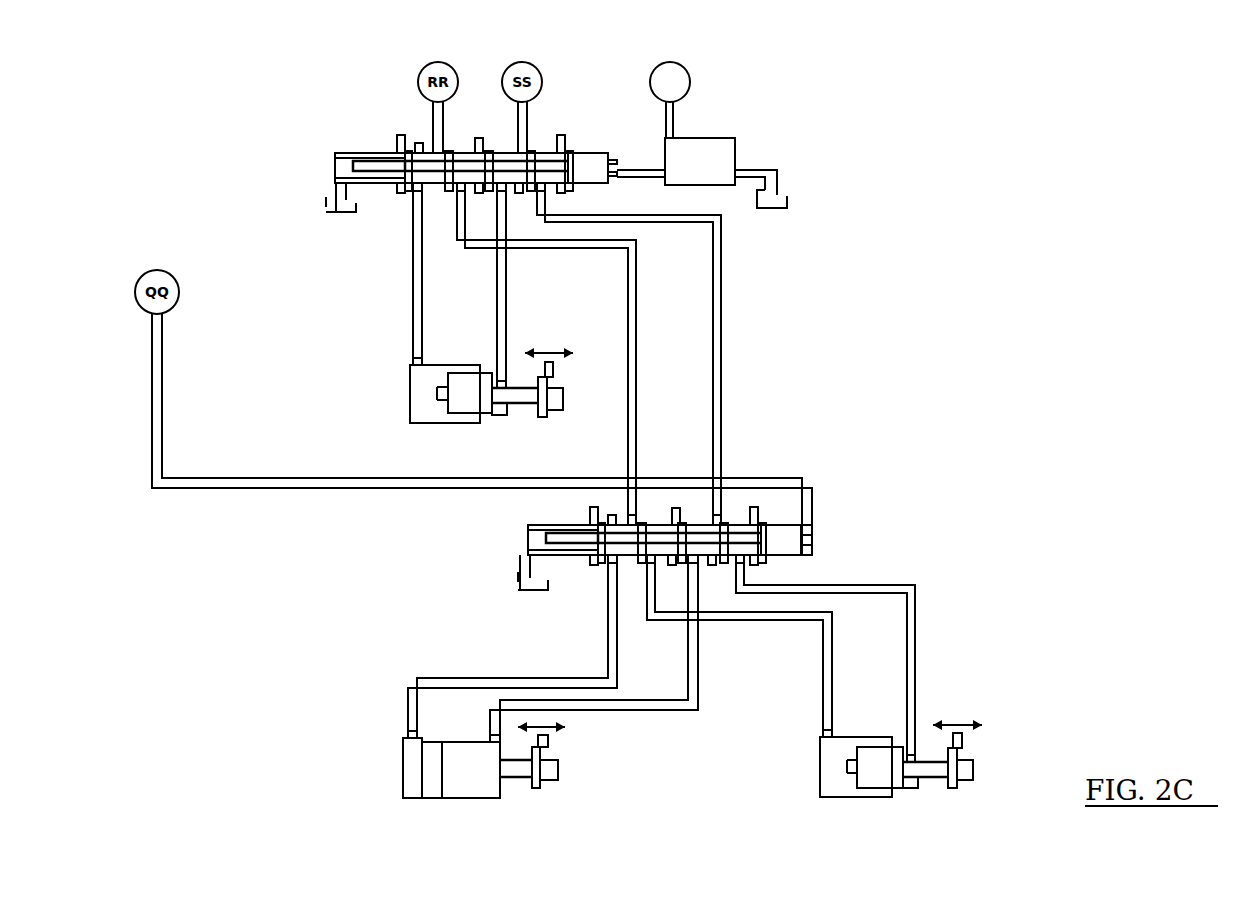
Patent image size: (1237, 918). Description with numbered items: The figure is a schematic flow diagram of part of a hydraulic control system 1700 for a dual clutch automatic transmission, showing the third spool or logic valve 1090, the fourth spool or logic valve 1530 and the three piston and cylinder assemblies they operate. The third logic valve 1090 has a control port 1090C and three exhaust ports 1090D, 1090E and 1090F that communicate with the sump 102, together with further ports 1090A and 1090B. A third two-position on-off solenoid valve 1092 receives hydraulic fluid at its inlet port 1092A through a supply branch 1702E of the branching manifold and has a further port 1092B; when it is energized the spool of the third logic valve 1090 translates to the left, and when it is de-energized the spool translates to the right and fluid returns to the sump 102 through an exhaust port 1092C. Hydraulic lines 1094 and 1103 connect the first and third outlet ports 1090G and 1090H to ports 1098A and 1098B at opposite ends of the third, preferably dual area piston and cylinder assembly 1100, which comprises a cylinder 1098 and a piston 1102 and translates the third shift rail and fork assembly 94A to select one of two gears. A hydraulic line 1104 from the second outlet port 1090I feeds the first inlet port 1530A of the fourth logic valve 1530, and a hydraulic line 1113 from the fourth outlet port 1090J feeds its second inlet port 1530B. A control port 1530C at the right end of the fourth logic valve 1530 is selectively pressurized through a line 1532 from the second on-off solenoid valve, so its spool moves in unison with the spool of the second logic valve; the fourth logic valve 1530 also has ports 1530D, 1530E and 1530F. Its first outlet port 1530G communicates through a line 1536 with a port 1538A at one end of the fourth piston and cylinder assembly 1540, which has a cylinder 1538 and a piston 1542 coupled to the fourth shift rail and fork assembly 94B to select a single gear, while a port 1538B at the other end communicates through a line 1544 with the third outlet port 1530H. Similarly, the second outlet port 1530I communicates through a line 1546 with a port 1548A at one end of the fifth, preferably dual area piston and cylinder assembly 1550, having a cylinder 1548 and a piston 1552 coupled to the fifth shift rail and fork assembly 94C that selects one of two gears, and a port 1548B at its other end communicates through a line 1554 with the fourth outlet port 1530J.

The control system 1700 is at (1020, 131).
The pressure sensor PP 1702E is at (662, 106).
The third spool or logic valve 1090 is at (588, 201).
The valve port 1090A is at (438, 148).
The valve port 1090B is at (527, 135).
The control port 1090C is at (618, 183).
The exhaust port 1090D is at (398, 137).
The exhaust port 1090E is at (479, 140).
The exhaust port 1090F is at (562, 137).
The first outlet port 1090G is at (418, 191).
The third outlet port 1090H is at (502, 192).
The second outlet port 1090I is at (458, 192).
The fourth outlet port 1090J is at (547, 190).
The third two-position solenoid valve 1092 is at (739, 156).
The inlet port 1092A is at (674, 124).
The pilot valve connection line 1092B is at (666, 176).
The exhaust port 1092C is at (760, 183).
The sump 102 is at (325, 206).
The hydraulic line 1094 is at (412, 292).
The hydraulic line 1103 is at (508, 297).
The hydraulic line 1104 is at (640, 378).
The hydraulic line 1113 is at (722, 378).
The third piston and cylinder assembly 1100 is at (457, 399).
The piston 1102 is at (463, 405).
The cylinder 1098 is at (466, 420).
The port 1098A is at (412, 363).
The port 1098B is at (501, 372).
The third shift rail and fork assembly 94A is at (564, 399).
The line 1532 is at (352, 489).
The fourth spool or logic valve 1530 is at (724, 561).
The first inlet port 1530A is at (631, 500).
The second inlet port 1530B is at (716, 500).
The control port 1530C is at (813, 552).
The valve port 1530D is at (614, 517).
The valve port 1530E is at (676, 508).
The valve port 1530F is at (758, 513).
The first outlet port 1530G is at (611, 566).
The third outlet port 1530H is at (691, 566).
The second outlet port 1530I is at (651, 566).
The fourth outlet port 1530J is at (738, 563).
The line 1536 is at (449, 680).
The line 1544 is at (637, 712).
The line 1546 is at (822, 666).
The line 1554 is at (914, 660).
The fourth piston and cylinder assembly 1540 is at (457, 741).
The piston 1542 is at (428, 790).
The cylinder 1538 is at (466, 800).
The port 1538A is at (412, 736).
The port 1538B is at (496, 740).
The fourth shift rail and fork assembly 94B is at (559, 776).
The fifth piston and cylinder assembly 1550 is at (905, 749).
The piston 1552 is at (868, 790).
The cylinder 1548 is at (878, 790).
The port 1548A is at (826, 736).
The actuator port 1548B is at (912, 738).
The fifth shift rail and fork assembly 94C is at (974, 776).